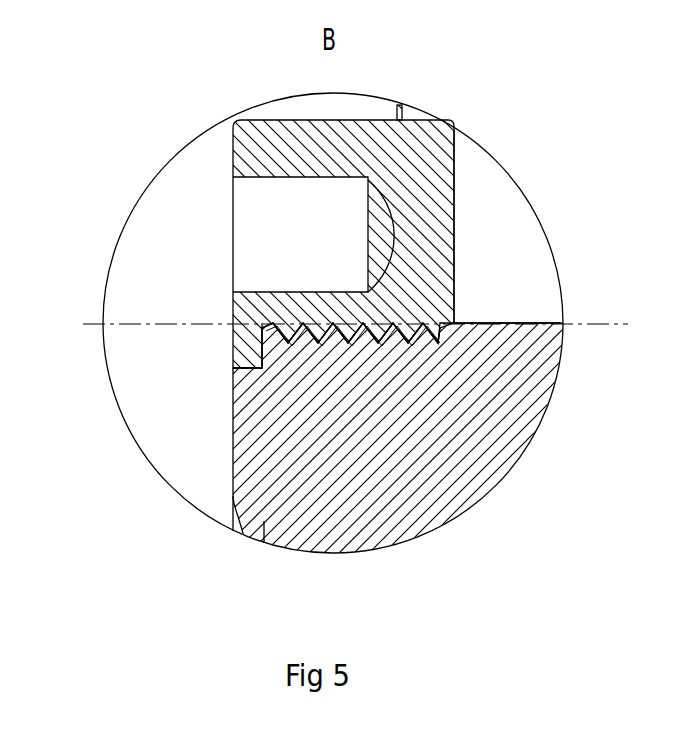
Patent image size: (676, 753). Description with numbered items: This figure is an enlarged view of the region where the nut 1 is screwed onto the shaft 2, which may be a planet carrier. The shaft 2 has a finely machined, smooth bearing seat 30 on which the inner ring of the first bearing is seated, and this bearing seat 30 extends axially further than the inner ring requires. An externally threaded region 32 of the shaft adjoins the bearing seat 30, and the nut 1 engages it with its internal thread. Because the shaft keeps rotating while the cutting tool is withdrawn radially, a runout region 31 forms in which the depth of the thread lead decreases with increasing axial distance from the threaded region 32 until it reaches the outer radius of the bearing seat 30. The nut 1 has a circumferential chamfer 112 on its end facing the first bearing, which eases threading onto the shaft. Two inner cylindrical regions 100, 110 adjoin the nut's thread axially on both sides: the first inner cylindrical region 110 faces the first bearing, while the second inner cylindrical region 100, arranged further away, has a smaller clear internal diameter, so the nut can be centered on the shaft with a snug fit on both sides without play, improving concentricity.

The nut 1 is at (413, 215).
The shaft 2 is at (442, 470).
The first inner cylindrical region 110 is at (440, 326).
The circumferential chamfer 112 is at (420, 333).
The bearing seat 30 is at (508, 322).
The runout region 31 is at (437, 330).
The threaded region 32 is at (277, 348).
The second inner cylindrical region 100 is at (236, 370).